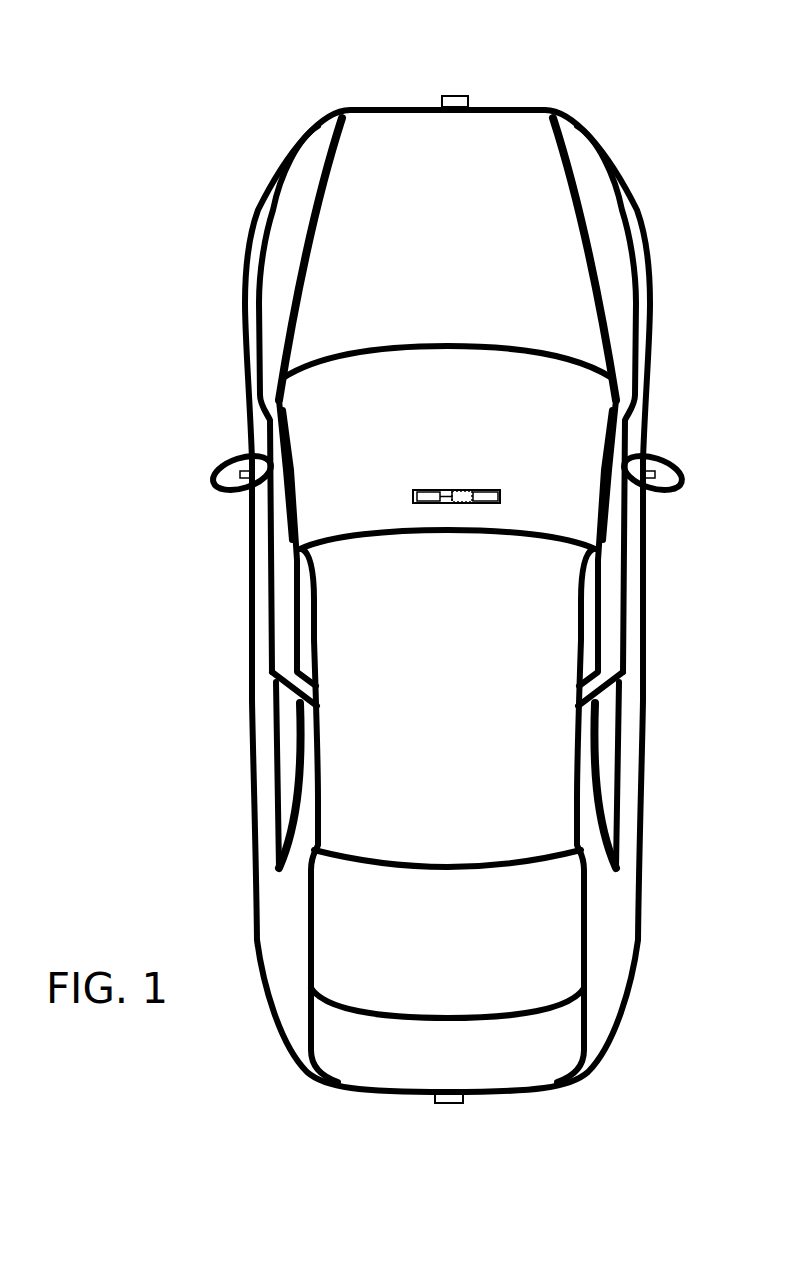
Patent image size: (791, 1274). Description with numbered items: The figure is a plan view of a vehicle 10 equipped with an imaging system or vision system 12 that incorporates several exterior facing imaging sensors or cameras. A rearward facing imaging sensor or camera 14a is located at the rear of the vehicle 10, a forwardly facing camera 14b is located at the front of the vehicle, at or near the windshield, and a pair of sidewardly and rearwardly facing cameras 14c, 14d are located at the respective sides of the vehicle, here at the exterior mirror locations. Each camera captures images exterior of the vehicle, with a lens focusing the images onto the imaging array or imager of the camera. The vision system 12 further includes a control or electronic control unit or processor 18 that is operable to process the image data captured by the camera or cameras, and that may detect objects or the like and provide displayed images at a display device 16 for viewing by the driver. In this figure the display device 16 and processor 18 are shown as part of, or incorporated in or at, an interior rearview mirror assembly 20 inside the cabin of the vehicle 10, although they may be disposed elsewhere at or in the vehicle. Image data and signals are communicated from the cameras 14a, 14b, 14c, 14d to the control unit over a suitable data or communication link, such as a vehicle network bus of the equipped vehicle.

The vehicle 10 is at (197, 200).
The vision system 12 is at (397, 1120).
The rearward facing camera 14a is at (450, 1099).
The forwardly facing camera 14b is at (457, 97).
The sidewardly/rearwardly facing camera 14c is at (243, 475).
The sidewardly/rearwardly facing camera 14d is at (647, 475).
The display device 16 is at (430, 490).
The electronic control unit 18 is at (451, 490).
The interior rearview mirror assembly 20 is at (498, 490).